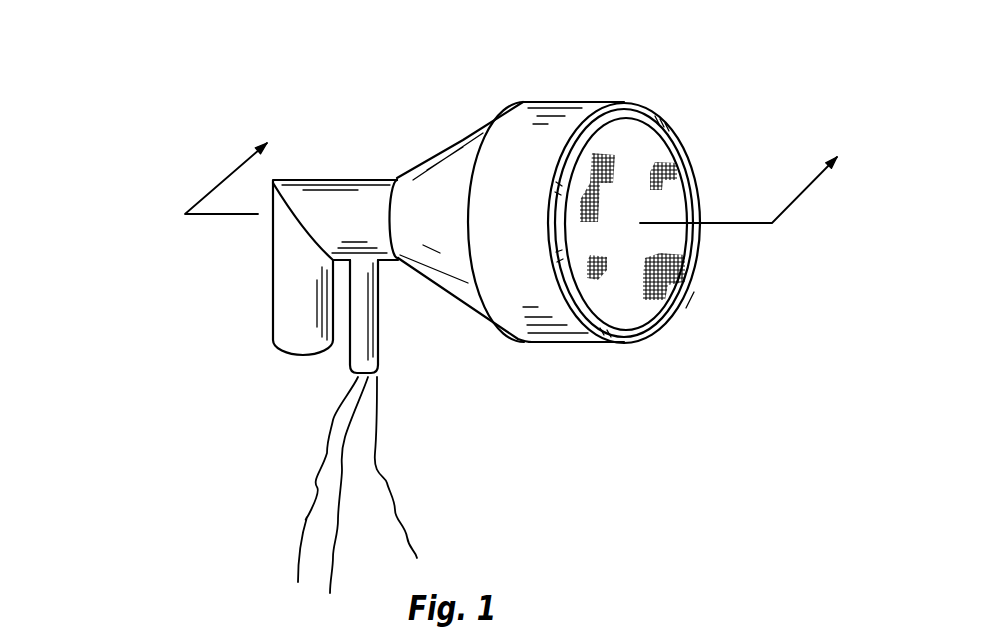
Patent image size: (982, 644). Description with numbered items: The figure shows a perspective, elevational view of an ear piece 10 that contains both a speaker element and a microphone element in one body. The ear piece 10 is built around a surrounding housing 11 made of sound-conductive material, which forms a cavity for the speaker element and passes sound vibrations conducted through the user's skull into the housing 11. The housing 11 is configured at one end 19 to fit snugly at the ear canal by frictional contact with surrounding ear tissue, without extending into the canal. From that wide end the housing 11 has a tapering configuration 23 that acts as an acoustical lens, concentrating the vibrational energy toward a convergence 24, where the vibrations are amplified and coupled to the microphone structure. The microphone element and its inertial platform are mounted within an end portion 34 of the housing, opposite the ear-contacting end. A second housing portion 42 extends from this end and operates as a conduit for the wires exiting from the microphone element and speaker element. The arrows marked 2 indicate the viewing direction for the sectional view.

The section line 2-2 (viewing direction of FIG. 2) 2 is at (519, 167).
The ear piece 10 is at (648, 98).
The housing 11 is at (529, 137).
The end of housing 19 is at (597, 335).
The tapering configuration 23 is at (443, 182).
The convergence 24 is at (399, 180).
The end portion of housing 34 is at (292, 252).
The second housing portion 42 is at (363, 320).